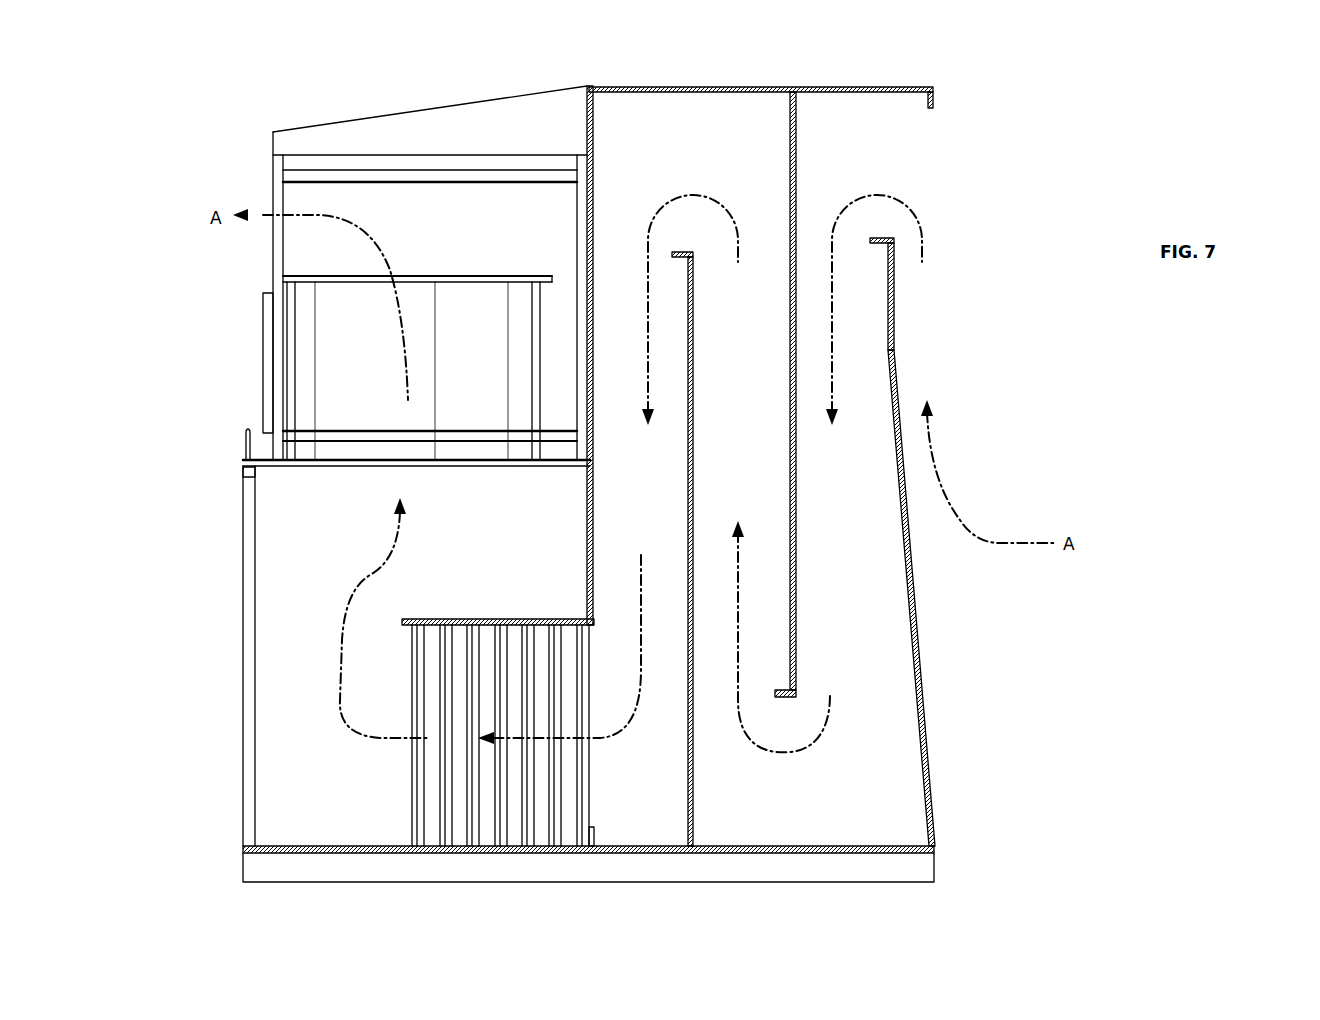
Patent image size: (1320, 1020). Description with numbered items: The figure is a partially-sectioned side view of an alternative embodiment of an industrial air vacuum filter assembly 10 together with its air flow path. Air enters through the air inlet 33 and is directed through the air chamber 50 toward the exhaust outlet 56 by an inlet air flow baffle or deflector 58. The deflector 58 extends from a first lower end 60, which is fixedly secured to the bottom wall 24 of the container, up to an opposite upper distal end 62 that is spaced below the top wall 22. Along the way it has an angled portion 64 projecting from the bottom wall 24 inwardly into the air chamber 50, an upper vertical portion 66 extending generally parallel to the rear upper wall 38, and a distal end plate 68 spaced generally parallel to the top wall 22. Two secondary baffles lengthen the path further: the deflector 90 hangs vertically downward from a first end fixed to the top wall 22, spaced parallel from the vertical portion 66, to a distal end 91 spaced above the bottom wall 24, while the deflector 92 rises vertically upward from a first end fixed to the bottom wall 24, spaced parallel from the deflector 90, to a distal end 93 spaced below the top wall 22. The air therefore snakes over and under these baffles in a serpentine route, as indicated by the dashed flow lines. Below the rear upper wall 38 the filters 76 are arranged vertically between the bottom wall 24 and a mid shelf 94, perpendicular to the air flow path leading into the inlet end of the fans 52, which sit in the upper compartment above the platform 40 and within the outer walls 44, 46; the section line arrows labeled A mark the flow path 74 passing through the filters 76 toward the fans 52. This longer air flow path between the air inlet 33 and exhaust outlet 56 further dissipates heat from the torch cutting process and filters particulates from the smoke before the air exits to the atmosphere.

The air vacuum filter assembly 10 is at (1081, 119).
The top wall 22 is at (752, 87).
The bottom wall 24 is at (786, 845).
The air inlet 33 is at (895, 150).
The rear upper wall 38 is at (590, 538).
The platform 40 is at (442, 467).
The outer wall 44 is at (209, 489).
The outer wall panel 46 is at (245, 672).
The air chamber 50 is at (752, 498).
The fans 52 is at (303, 357).
The exhaust outlet 56 is at (318, 280).
The inlet air flow baffle or deflector 58 is at (943, 598).
The first lower end 60 is at (934, 846).
The upper distal end 62 is at (928, 266).
The angled portion 64 is at (922, 717).
The upper vertical portion 66 is at (894, 312).
The distal end plate 68 is at (873, 243).
The air flow path 74 is at (428, 632).
The filters 76 is at (500, 800).
The secondary air flow deflector 90 is at (797, 167).
The distal end 91 is at (806, 700).
The secondary air flow deflector 92 is at (687, 483).
The distal end 93 is at (680, 248).
The mid shelf 94 is at (485, 618).